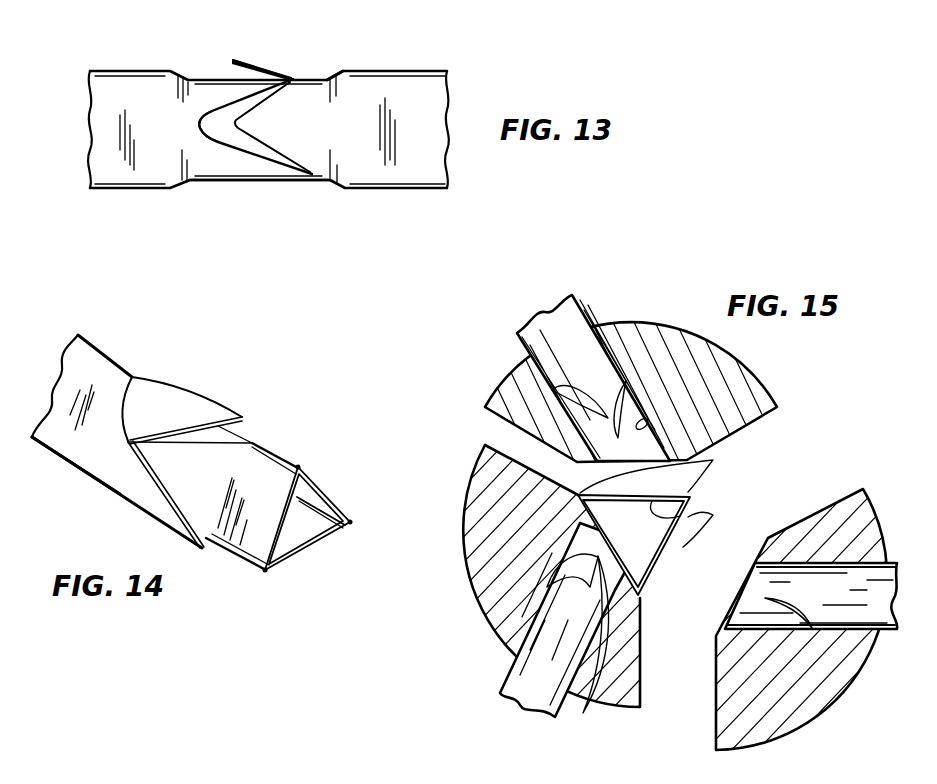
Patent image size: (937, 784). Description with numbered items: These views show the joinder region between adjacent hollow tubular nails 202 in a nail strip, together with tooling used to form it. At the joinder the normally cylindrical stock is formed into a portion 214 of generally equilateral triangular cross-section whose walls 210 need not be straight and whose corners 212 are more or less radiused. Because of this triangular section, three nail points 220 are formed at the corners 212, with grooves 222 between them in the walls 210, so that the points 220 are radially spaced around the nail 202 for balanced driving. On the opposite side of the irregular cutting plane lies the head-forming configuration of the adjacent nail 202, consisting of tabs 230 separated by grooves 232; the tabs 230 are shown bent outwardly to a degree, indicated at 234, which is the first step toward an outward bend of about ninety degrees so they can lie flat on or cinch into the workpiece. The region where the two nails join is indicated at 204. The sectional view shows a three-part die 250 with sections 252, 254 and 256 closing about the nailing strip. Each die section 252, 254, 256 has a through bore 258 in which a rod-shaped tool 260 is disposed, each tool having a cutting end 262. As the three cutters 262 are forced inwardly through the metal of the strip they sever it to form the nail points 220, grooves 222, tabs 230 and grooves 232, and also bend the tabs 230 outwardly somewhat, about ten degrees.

In FIG. 13, the nail 202 is at (117, 172).
In FIG. 14, the nail 202 is at (82, 358).
In FIG. 13, the joint region 204 is at (312, 184).
In FIG. 14, the wall 210 is at (335, 492).
In FIG. 15, the wall 210 is at (714, 515).
In FIG. 14, the corner 212 is at (303, 463).
In FIG. 15, the corner 212 is at (722, 457).
In FIG. 13, the portion of triangular cross-section 214 is at (268, 182).
In FIG. 14, the portion of triangular cross-section 214 is at (108, 487).
In FIG. 13, the nail point 220 is at (303, 80).
In FIG. 14, the nail point 220 is at (222, 413).
In FIG. 13, the groove 222 is at (203, 124).
In FIG. 14, the groove 222 is at (133, 382).
In FIG. 13, the tab 230 is at (233, 61).
In FIG. 13, the groove 232 is at (343, 71).
In FIG. 14, the groove 232 is at (267, 478).
In FIG. 13, the outward bending 234 is at (263, 67).
In FIG. 15, the three-part die 250 is at (824, 385).
In FIG. 15, the die section 252 is at (670, 322).
In FIG. 15, the die section 254 is at (497, 622).
In FIG. 15, the die section 256 is at (733, 735).
In FIG. 15, the through bore 258 is at (640, 427).
In FIG. 15, the rod-shaped tool 260 is at (578, 322).
In FIG. 15, the cutting end 262 is at (528, 384).